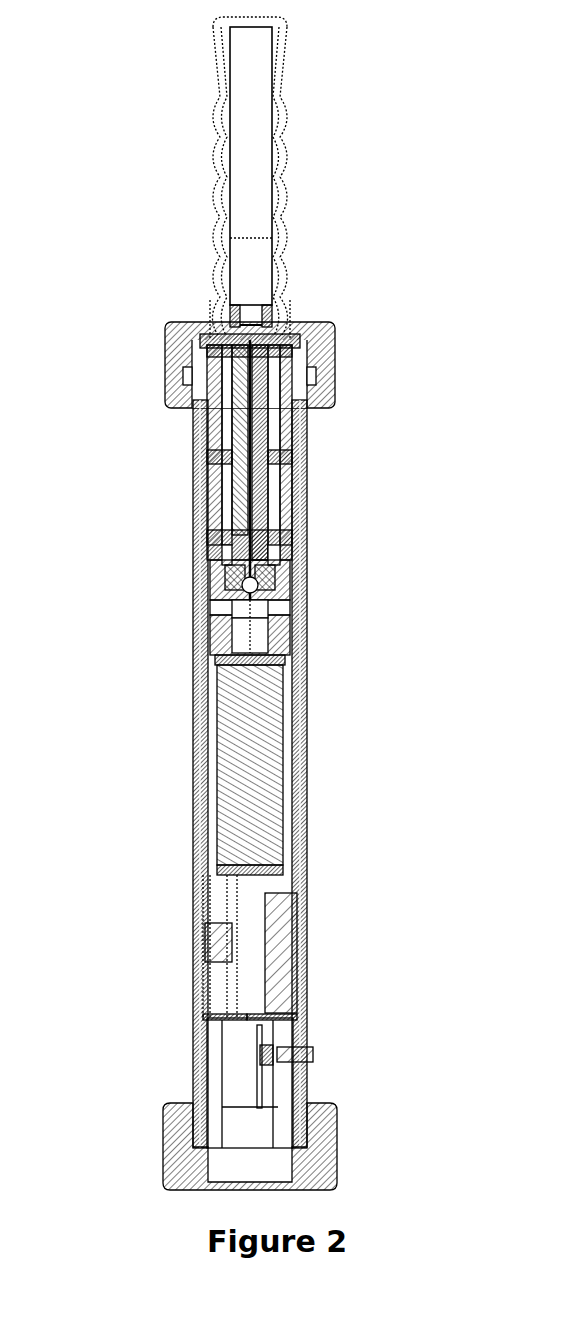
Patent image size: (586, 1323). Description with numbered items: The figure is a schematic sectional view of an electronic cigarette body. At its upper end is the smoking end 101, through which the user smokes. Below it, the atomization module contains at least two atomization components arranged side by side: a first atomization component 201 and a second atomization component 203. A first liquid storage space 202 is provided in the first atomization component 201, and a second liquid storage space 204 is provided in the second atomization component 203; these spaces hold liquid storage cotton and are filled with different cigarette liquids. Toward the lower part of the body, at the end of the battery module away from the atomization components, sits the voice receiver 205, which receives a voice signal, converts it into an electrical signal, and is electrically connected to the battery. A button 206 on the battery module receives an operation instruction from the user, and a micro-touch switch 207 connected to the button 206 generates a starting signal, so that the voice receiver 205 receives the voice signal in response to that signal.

The smoking end 101 is at (283, 140).
The first atomization component 201 is at (272, 370).
The first liquid storage space 202 is at (288, 472).
The second atomization component 203 is at (226, 370).
The second liquid storage space 204 is at (218, 470).
The voice receiver 205 is at (213, 942).
The button 206 is at (310, 1053).
The micro-touch switch 207 is at (267, 1058).